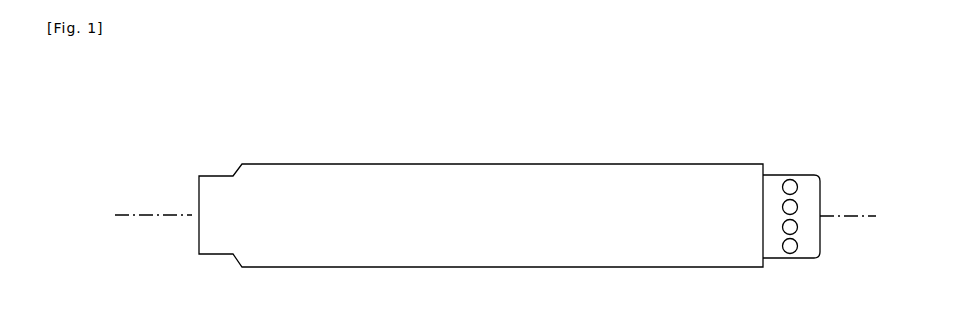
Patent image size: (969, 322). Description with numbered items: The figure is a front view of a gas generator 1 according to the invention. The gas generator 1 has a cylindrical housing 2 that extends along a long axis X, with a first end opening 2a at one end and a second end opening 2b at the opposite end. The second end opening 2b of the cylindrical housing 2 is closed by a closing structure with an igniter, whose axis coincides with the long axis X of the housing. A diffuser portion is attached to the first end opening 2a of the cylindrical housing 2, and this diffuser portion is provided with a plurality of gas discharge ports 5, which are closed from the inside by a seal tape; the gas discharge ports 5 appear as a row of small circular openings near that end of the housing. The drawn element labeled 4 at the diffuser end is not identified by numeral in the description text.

The gas generator 1 is at (506, 186).
The cylindrical housing 2 is at (638, 190).
The first end opening 2a is at (765, 173).
The second end opening 2b is at (199, 189).
The end plate / flange portion 4 is at (805, 253).
The gas discharge ports 5 is at (798, 203).